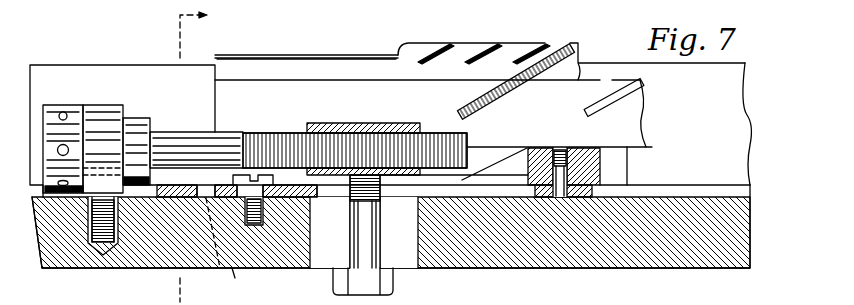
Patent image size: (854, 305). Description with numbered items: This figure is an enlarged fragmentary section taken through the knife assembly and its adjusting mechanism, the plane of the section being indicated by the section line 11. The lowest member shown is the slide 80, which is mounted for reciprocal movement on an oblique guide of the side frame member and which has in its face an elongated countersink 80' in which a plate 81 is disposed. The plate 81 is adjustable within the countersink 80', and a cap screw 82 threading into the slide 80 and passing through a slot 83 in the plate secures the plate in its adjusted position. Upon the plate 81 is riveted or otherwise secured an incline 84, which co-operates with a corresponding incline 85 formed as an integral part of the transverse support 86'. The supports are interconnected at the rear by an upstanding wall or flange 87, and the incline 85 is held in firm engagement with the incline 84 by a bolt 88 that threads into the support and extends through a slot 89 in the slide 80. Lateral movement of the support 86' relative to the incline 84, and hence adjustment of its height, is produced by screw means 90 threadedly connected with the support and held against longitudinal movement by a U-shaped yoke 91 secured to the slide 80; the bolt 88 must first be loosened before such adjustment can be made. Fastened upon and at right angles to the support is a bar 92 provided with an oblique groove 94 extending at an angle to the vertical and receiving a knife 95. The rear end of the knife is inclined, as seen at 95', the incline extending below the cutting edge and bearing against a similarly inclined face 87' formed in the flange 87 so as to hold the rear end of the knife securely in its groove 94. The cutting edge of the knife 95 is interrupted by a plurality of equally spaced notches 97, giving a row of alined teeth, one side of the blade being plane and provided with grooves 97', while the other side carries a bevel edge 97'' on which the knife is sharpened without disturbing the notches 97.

The section line 11 is at (209, 154).
The slide 80 is at (391, 178).
The elongated countersink 80' is at (245, 282).
The plate 81 is at (330, 232).
The cap screw 82 is at (250, 180).
The slot 83 is at (285, 269).
The incline 84 is at (454, 165).
The incline 85 is at (490, 147).
The transverse support 86' is at (363, 131).
The upstanding wall or flange 87 is at (298, 45).
The inclined face 87' is at (306, 49).
The bolt 88 is at (352, 246).
The slot 89 is at (399, 232).
The screw means 90 is at (224, 133).
The U-shaped yoke 91 is at (96, 105).
The bar 92 is at (433, 113).
The oblique groove 94 is at (598, 108).
The knife 95 is at (435, 41).
The inclined rear end 95' is at (550, 51).
The notch 97 is at (485, 41).
The groove 97' is at (535, 43).
The bevel edge 97'' is at (538, 70).